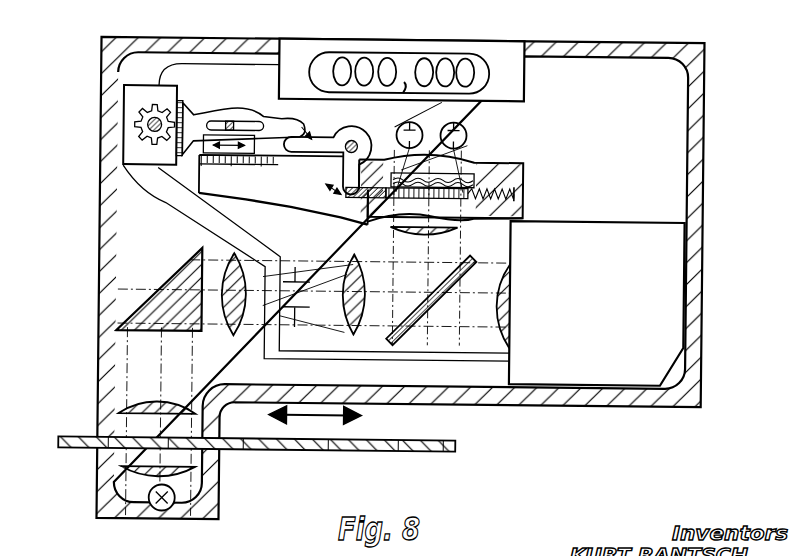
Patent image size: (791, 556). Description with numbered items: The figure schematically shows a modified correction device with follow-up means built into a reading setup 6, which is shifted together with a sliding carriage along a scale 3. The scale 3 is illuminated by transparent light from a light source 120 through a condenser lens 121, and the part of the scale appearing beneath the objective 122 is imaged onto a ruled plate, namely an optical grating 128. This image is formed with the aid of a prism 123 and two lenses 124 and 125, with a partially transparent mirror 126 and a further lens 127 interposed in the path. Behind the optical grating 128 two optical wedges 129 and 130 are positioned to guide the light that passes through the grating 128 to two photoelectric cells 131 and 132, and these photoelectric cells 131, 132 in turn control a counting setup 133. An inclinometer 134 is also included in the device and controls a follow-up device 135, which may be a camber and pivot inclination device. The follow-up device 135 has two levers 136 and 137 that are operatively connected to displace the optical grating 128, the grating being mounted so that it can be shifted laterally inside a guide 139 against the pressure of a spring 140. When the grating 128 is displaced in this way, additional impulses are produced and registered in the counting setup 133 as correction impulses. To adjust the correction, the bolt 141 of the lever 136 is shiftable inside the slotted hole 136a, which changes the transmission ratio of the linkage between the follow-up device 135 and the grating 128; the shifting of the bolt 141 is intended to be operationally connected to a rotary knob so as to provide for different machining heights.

The scale 3 is at (387, 452).
The reading setup 6 is at (99, 252).
The light source 120 is at (153, 508).
The condenser lens 121 is at (190, 473).
The objective 122 is at (130, 414).
The prism 123 is at (178, 276).
The lens 124 is at (248, 265).
The lens 125 is at (352, 322).
The partially transparent mirror 126 is at (422, 316).
The lens 127 is at (452, 234).
The optical grating 128 is at (500, 173).
The optical wedge 129 is at (386, 218).
The optical wedge 130 is at (472, 173).
The photoelectric cell 131 is at (404, 125).
The photoelectric cell 132 is at (467, 130).
The counting setup 133 is at (514, 90).
The inclinometer 134 is at (613, 252).
The follow-up device 135 is at (128, 151).
The lever 136 is at (190, 120).
The slotted hole 136a is at (258, 133).
The lever 137 is at (318, 139).
The guide 139 is at (364, 210).
The spring 140 is at (523, 195).
The bolt 141 is at (231, 125).